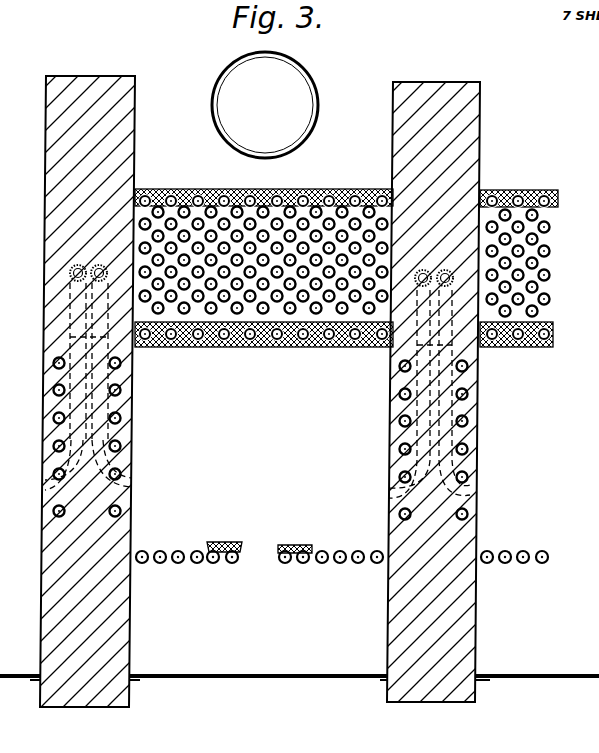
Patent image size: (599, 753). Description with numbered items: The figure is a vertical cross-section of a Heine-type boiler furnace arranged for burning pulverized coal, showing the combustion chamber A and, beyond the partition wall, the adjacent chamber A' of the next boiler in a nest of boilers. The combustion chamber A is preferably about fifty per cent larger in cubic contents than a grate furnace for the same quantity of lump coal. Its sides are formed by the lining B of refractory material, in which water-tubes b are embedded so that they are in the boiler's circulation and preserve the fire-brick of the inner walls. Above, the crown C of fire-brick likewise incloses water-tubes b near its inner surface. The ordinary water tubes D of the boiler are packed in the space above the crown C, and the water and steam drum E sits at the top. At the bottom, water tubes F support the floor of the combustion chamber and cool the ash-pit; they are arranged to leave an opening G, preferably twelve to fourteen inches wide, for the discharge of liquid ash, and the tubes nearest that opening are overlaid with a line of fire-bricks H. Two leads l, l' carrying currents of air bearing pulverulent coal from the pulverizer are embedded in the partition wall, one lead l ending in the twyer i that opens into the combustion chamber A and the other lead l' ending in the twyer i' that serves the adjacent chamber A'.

The combustion chamber A is at (244, 433).
The adjacent chamber A' is at (527, 438).
The lining of the combustion chamber B is at (133, 458).
The crown of the combustion chamber C is at (292, 350).
The water tubes of the boiler D is at (138, 242).
The water and steam drum E is at (265, 105).
The water tubes F is at (215, 562).
The opening G is at (342, 553).
The line of fire-bricks H is at (297, 543).
The water-tubes b is at (133, 411).
The twyer i is at (99, 471).
The twyer i' is at (418, 483).
The tubes l is at (89, 340).
The tubes l' is at (434, 354).